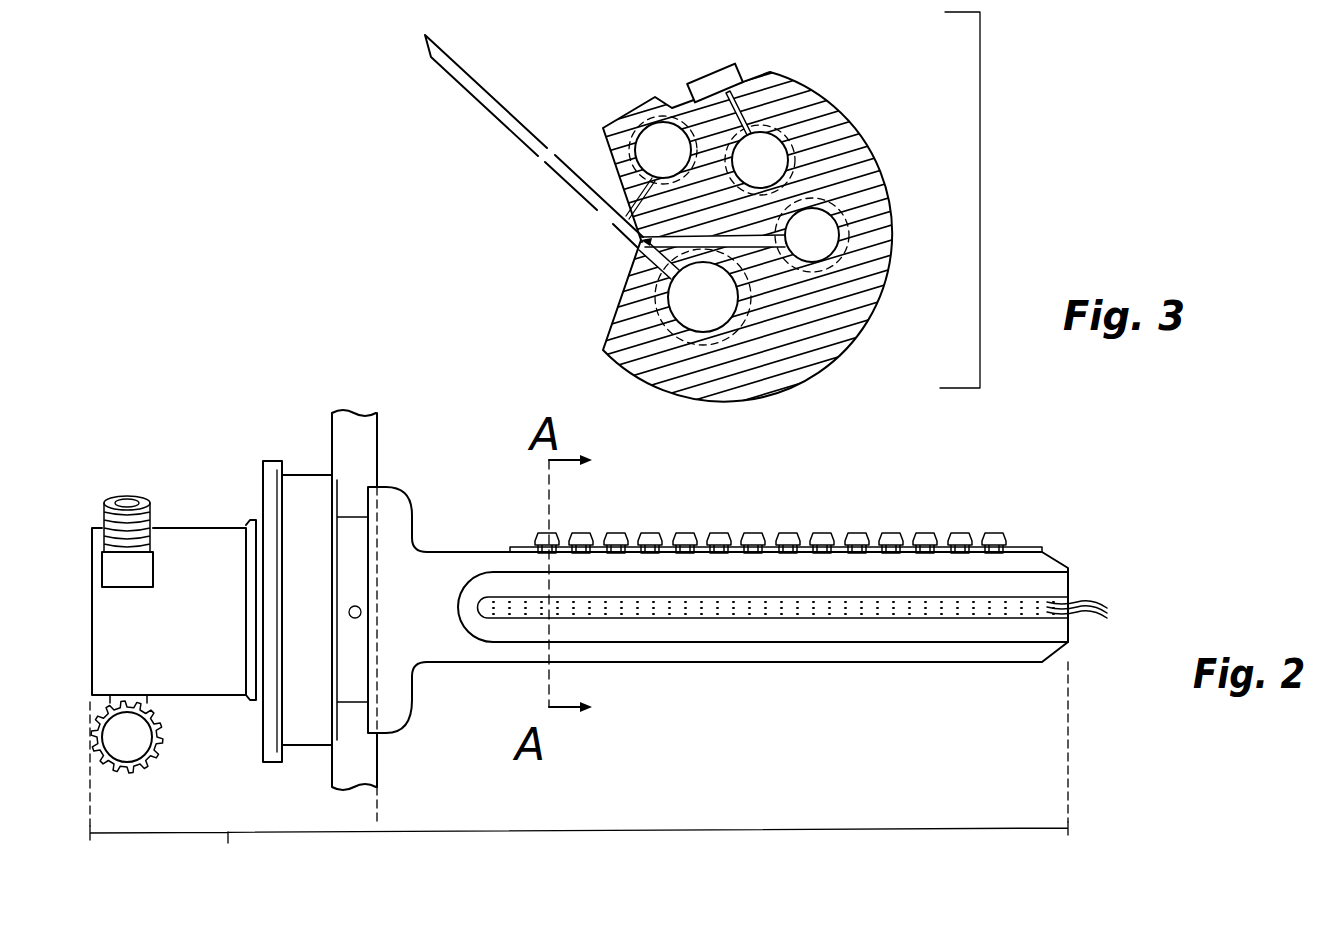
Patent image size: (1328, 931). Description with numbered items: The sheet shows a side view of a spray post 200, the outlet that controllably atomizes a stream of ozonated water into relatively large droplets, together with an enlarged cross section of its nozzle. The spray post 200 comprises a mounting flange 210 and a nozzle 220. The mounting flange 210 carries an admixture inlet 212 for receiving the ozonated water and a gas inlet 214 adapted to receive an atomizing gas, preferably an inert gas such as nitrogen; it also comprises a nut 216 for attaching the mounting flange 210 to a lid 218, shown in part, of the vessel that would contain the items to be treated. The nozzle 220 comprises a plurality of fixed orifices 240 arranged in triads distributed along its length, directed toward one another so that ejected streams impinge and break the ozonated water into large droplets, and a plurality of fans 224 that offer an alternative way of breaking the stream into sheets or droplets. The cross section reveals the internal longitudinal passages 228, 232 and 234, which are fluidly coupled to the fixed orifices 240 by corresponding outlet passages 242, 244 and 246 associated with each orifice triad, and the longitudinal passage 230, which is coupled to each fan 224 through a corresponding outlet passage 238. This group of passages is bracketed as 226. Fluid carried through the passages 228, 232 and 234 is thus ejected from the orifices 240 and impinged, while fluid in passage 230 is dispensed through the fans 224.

In FIG. 2, the spray post 200 is at (1015, 675).
In FIG. 2, the mounting flange 210 is at (171, 790).
In FIG. 2, the admixture inlet 212 is at (130, 740).
In FIG. 2, the gas inlet 214 is at (140, 507).
In FIG. 2, the nut 216 is at (308, 480).
In FIG. 2, the lid 218 is at (378, 444).
In FIG. 2, the nozzle 220 is at (648, 770).
In FIG. 3, the fans 224 is at (704, 80).
In FIG. 2, the fans 224 is at (680, 537).
In FIG. 3, the channel array 226 is at (982, 132).
In FIG. 3, the longitudinal passage 228 is at (657, 146).
In FIG. 3, the longitudinal passage 230 is at (765, 158).
In FIG. 3, the longitudinal passage 232 is at (815, 236).
In FIG. 3, the longitudinal passage 234 is at (713, 300).
In FIG. 3, the outlet passage 238 is at (748, 100).
In FIG. 3, the fixed orifices 240 is at (425, 38).
In FIG. 2, the fixed orifices 240 is at (1103, 619).
In FIG. 3, the outlet passage 242 is at (618, 176).
In FIG. 3, the outlet passage 244 is at (633, 250).
In FIG. 3, the outlet passage 246 is at (622, 282).